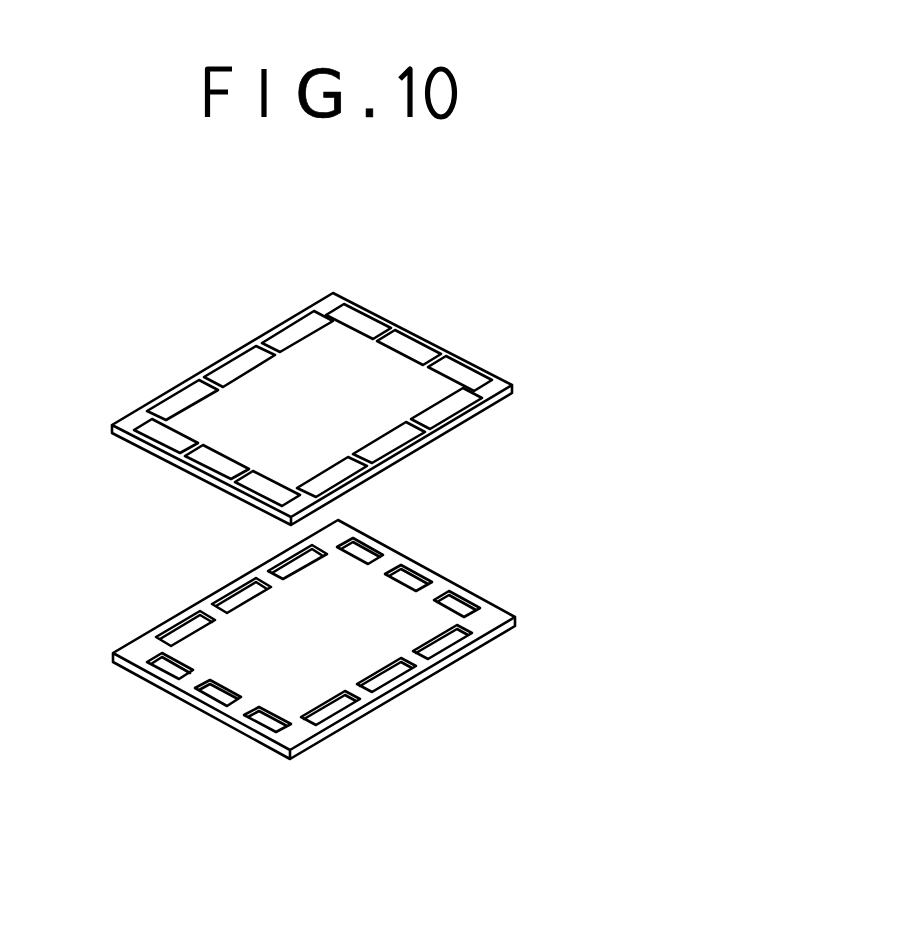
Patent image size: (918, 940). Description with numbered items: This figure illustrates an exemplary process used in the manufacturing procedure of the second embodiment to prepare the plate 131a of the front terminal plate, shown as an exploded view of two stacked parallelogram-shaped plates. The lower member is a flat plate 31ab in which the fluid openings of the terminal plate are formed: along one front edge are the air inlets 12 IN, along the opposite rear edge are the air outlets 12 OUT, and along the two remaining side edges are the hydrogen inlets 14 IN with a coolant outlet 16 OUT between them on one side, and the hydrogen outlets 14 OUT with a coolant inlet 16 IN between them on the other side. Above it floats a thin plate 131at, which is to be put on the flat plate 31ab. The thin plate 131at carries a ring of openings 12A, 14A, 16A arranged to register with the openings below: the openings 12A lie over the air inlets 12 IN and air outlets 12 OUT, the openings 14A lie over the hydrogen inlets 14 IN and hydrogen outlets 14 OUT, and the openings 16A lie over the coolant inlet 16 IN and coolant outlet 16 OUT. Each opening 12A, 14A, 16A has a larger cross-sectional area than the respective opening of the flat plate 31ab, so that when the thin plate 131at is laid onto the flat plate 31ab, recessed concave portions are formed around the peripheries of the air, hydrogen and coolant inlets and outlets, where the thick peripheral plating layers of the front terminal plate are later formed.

The plate 131a is at (593, 496).
The thin plate 131at is at (510, 388).
The flat plate 31ab is at (307, 733).
The opening 12A is at (289, 325).
The opening 14A is at (362, 318).
The opening 16A is at (418, 347).
The air inlet 12 IN is at (192, 633).
The air outlet 12 OUT is at (355, 724).
The hydrogen inlet 14 IN is at (160, 676).
The hydrogen outlet 14 OUT is at (346, 543).
The coolant inlet 16 IN is at (428, 573).
The coolant outlet 16 OUT is at (212, 693).